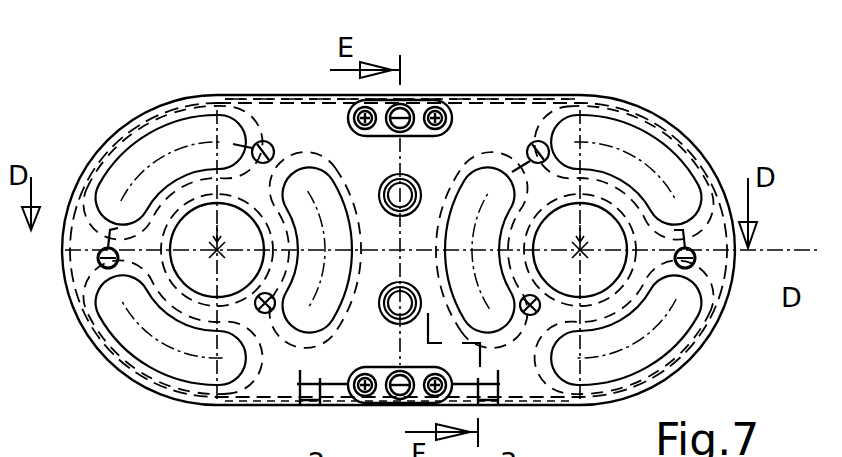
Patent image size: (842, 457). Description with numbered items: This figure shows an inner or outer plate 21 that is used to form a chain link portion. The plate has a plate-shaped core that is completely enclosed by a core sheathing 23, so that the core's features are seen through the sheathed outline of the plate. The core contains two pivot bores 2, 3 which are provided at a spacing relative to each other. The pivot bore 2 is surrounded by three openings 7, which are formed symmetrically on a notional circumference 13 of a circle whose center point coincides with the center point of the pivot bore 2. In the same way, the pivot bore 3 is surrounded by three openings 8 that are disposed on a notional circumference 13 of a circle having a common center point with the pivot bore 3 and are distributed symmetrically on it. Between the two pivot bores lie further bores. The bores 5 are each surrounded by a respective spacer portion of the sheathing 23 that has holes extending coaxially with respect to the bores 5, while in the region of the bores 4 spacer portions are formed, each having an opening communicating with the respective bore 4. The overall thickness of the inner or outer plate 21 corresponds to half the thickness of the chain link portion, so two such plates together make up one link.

The pivot bore 2 is at (600, 230).
The pivot bore 3 is at (168, 258).
The bore 4 is at (412, 183).
The bore 5 is at (437, 110).
The opening 7 is at (641, 137).
The opening 8 is at (148, 150).
The notional circumference of a circle 13 is at (726, 332).
The inner plate 21 is at (258, 100).
The core sheathing 23 is at (505, 118).